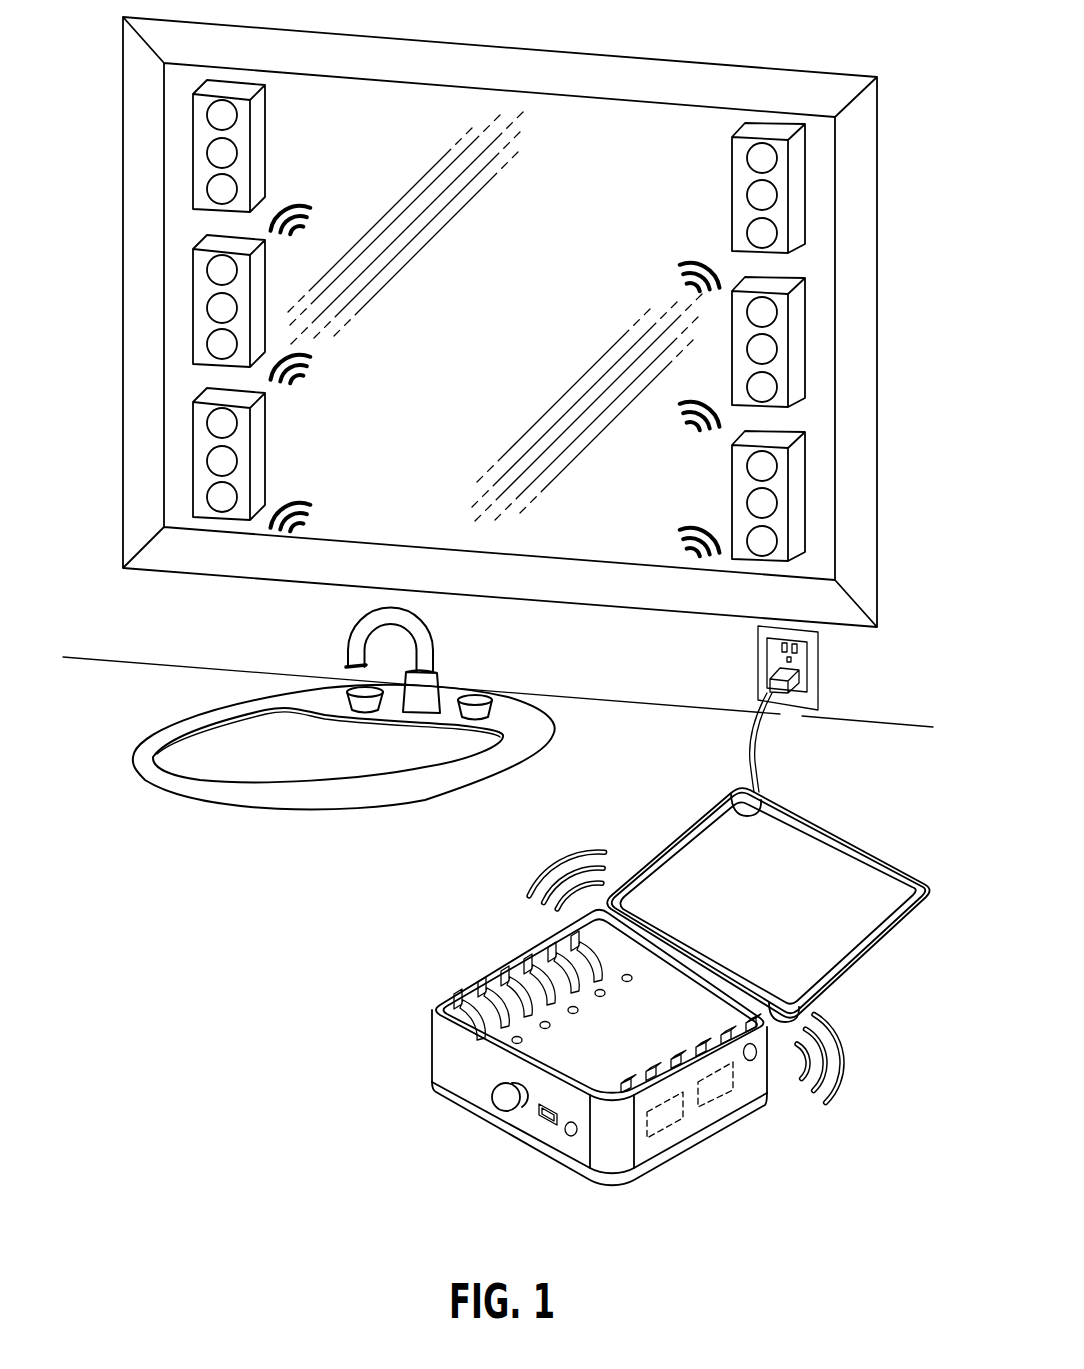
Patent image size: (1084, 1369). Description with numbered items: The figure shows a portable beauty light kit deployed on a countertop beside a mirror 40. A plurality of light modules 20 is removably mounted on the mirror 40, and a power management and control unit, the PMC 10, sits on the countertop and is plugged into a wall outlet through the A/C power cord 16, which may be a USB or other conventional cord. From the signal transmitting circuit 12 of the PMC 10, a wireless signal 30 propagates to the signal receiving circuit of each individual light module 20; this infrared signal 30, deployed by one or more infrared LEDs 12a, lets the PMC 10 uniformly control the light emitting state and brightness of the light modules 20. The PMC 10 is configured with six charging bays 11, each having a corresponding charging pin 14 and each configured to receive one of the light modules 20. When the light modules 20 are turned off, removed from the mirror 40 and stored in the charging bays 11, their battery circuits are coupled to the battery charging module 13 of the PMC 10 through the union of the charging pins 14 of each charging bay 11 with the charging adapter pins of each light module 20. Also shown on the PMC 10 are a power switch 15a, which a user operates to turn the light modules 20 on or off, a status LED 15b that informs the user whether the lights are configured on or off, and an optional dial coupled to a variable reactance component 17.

The power management and control unit 10 is at (442, 1052).
The charging bays 11 is at (520, 968).
The signal transmitting circuit 12 is at (712, 1088).
The infrared LEDs 12a is at (752, 1061).
The battery charging module 13 is at (667, 1117).
The charging pins 14 is at (545, 1025).
The power switch 15a is at (547, 1118).
The status LED 15b is at (572, 1136).
The A/C power cord 16 is at (762, 715).
The variable reactance component 17 is at (500, 1097).
The light modules 20 is at (257, 137).
The wireless signal 30 is at (292, 210).
The mirror 40 is at (504, 315).